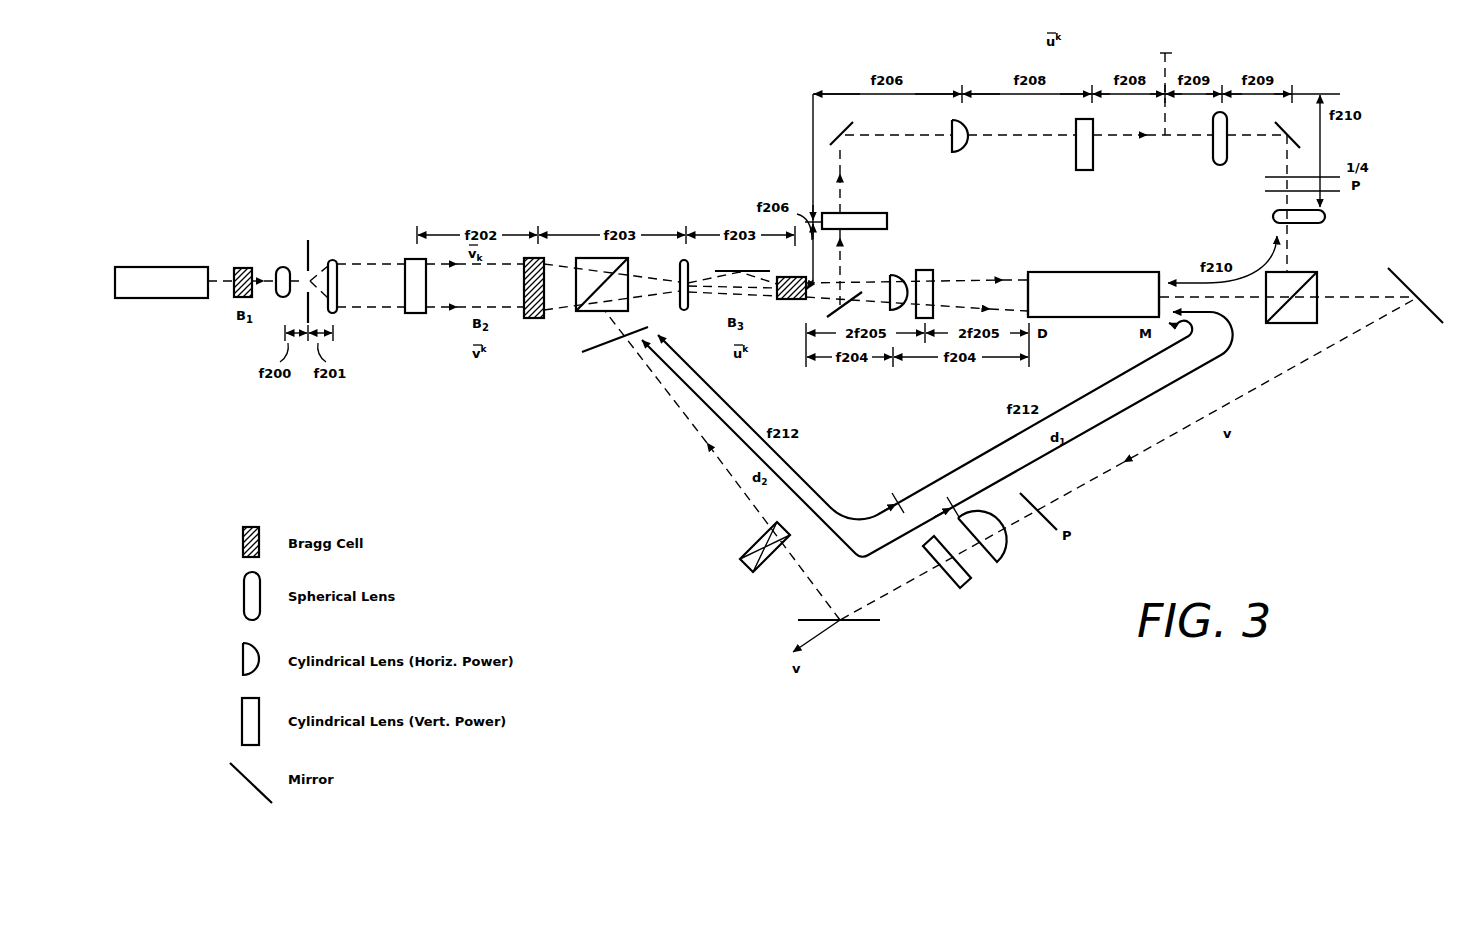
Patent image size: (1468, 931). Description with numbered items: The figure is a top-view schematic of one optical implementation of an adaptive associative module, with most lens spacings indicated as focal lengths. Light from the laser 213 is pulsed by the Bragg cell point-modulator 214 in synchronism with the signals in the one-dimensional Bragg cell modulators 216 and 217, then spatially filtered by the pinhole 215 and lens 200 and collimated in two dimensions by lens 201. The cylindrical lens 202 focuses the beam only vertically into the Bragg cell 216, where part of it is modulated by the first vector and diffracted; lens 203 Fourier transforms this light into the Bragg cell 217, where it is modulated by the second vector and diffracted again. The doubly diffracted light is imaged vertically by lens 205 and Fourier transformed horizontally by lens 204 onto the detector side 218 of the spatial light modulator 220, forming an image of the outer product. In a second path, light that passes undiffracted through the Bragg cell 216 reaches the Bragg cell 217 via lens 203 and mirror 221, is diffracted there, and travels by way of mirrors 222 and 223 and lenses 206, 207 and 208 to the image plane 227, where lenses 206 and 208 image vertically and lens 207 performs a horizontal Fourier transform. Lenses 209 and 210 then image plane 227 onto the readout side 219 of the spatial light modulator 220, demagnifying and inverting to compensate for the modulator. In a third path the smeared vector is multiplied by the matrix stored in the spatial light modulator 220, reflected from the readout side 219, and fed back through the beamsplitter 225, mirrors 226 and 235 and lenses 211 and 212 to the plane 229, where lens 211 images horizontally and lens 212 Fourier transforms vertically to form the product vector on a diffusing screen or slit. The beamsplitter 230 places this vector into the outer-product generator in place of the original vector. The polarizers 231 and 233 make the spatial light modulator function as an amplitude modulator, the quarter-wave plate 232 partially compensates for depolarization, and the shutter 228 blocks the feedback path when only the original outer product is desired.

The lens 200 is at (283, 266).
The lens 201 is at (337, 306).
The cylindrical lens 202 is at (405, 262).
The lens 203 is at (686, 311).
The lens 204 is at (893, 274).
The lens 205 is at (926, 269).
The lens 206 is at (887, 222).
The lens 207 is at (965, 152).
The lens 208 is at (1093, 150).
The lens 209 is at (1218, 165).
The lens 210 is at (1325, 217).
The lens 211 is at (1001, 540).
The lens 212 is at (968, 581).
The laser 213 is at (163, 265).
The Bragg cell point-modulator 214 is at (241, 266).
The pinhole 215 is at (309, 238).
The Bragg cell 216 is at (534, 319).
The Bragg cell 217 is at (788, 300).
The detector side 218 is at (1023, 274).
The readout side 219 is at (1159, 273).
The MSLM 220 is at (1086, 318).
The mirror 221 is at (720, 268).
The mirror 222 is at (848, 292).
The mirror 223 is at (834, 143).
The beamsplitter 225 is at (1307, 313).
The mirror 226 is at (1410, 290).
The image plane 227 is at (1172, 52).
The shutter 228 is at (746, 565).
The plane 229 is at (606, 343).
The beamsplitter 230 is at (590, 256).
The polarizer 231 is at (1273, 192).
The quarter-wave plate 232 is at (1272, 176).
The polarizer 233 is at (1057, 521).
The mirror 235 is at (868, 622).